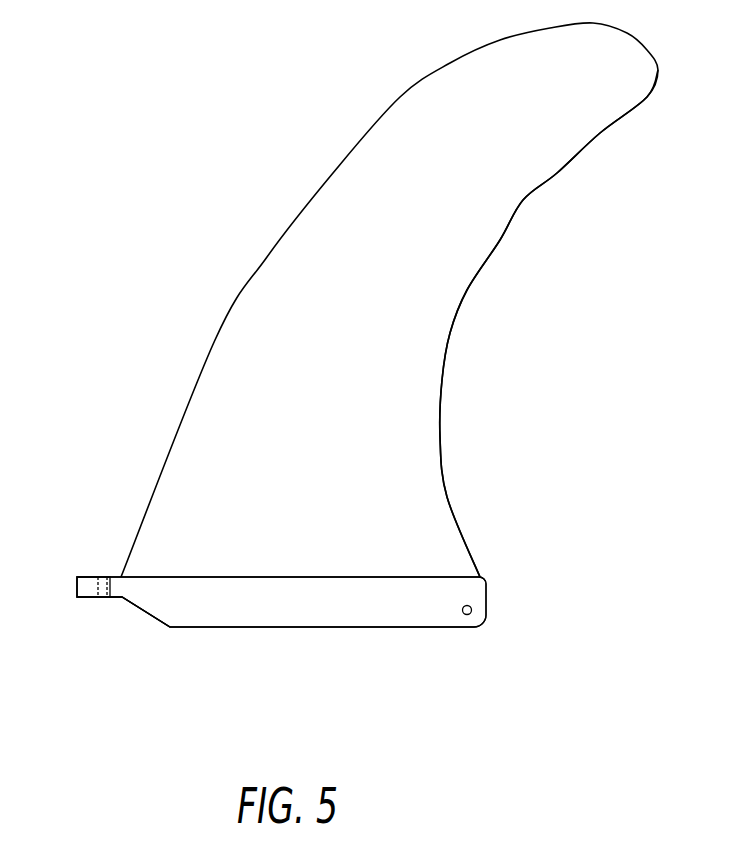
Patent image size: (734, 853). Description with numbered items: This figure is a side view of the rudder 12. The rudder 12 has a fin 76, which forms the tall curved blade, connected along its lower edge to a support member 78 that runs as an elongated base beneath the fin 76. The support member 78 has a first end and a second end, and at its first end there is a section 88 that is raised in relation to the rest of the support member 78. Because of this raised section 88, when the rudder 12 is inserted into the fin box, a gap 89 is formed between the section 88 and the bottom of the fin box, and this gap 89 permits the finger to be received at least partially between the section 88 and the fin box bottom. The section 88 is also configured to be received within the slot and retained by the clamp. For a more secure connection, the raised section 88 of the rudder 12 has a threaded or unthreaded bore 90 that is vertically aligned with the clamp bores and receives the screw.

The rudder 12 is at (172, 331).
The fin 76 is at (403, 453).
The support member 78 is at (398, 627).
The section 88 is at (77, 587).
The gap 89 is at (117, 608).
The bore 90 is at (90, 578).